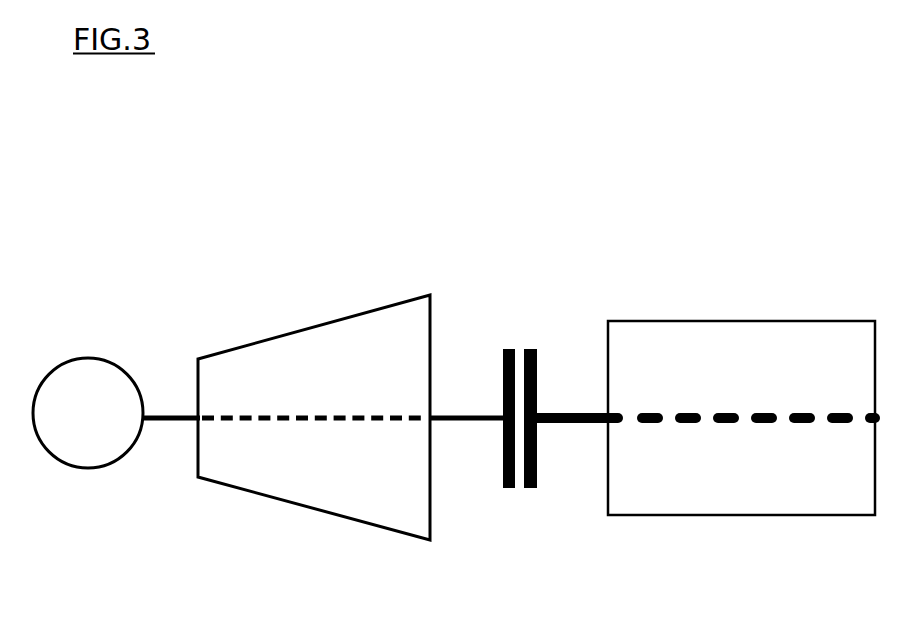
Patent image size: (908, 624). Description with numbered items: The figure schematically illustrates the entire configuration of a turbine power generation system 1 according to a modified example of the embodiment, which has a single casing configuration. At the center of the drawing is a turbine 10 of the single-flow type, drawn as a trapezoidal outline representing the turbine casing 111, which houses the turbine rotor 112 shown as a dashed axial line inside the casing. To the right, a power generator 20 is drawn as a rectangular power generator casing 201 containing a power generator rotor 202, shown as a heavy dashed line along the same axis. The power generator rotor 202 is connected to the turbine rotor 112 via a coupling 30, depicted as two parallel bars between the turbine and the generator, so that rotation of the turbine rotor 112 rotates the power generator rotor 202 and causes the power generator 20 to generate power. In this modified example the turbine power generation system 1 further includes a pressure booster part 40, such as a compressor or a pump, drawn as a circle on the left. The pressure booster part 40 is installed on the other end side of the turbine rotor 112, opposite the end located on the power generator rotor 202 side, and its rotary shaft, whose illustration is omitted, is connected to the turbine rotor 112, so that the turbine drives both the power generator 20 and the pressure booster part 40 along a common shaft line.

The turbine power generation system 1 is at (473, 142).
The turbine 10 is at (352, 308).
The turbine casing 111 is at (360, 478).
The turbine rotor 112 is at (278, 420).
The power generator 20 is at (802, 313).
The power generator casing 201 is at (833, 487).
The power generator rotor 202 is at (680, 418).
The coupling 30 is at (521, 348).
The pressure booster part 40 is at (84, 383).